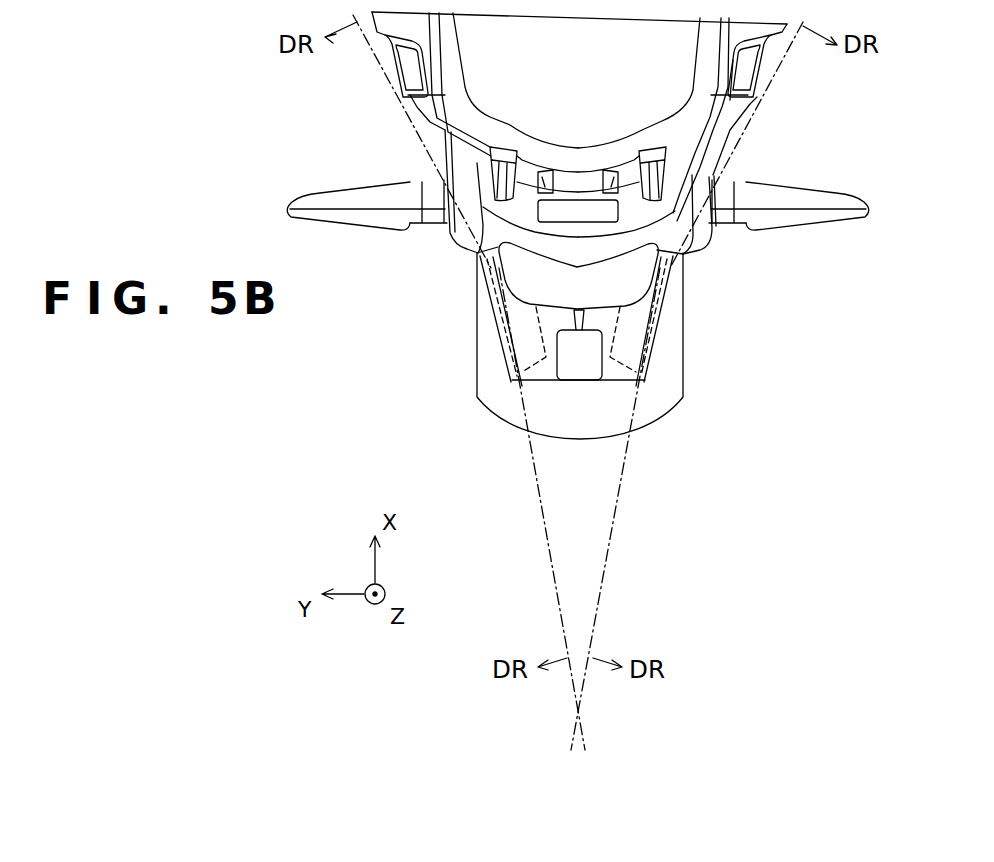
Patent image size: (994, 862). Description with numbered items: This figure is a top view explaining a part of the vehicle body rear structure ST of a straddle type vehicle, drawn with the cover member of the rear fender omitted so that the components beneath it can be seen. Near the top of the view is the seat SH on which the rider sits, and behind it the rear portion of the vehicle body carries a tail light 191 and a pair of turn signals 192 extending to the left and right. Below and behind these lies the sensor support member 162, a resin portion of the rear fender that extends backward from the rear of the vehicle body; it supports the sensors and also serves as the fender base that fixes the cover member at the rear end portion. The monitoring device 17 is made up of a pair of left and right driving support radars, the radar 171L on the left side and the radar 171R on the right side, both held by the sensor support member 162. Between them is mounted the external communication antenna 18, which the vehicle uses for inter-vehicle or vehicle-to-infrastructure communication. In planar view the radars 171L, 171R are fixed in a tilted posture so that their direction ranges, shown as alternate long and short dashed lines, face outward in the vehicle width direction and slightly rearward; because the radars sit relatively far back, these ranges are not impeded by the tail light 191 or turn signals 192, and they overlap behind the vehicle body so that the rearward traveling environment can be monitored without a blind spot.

The turn signals 192 is at (314, 197).
The tail light 191 is at (657, 274).
The monitoring device 17 is at (477, 316).
The external communication antenna 18 is at (557, 345).
The sensor support member 162 is at (663, 312).
The radar 171L is at (497, 283).
The radar 171R is at (659, 347).
The seat SH is at (735, 83).
The vehicle body rear structure ST is at (338, 383).